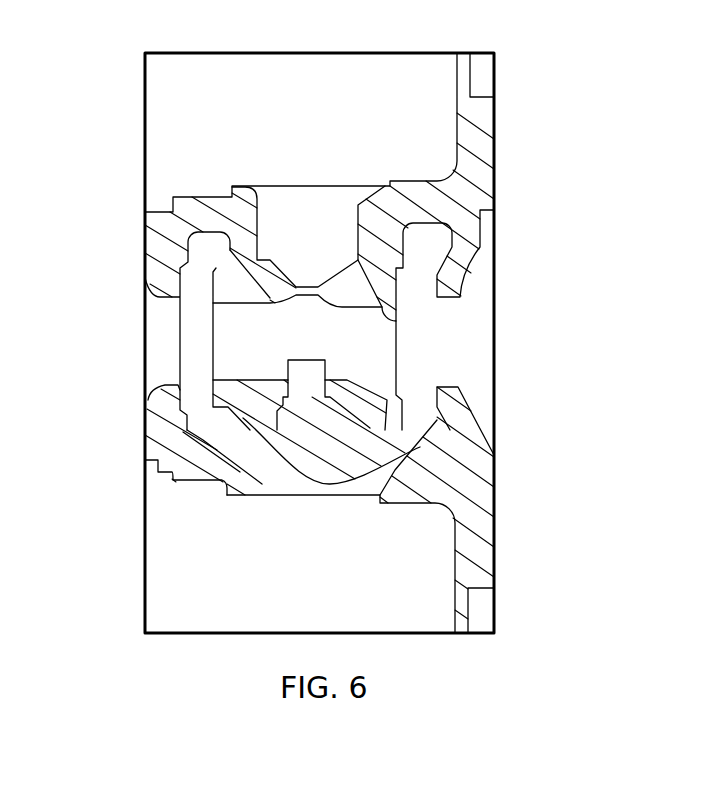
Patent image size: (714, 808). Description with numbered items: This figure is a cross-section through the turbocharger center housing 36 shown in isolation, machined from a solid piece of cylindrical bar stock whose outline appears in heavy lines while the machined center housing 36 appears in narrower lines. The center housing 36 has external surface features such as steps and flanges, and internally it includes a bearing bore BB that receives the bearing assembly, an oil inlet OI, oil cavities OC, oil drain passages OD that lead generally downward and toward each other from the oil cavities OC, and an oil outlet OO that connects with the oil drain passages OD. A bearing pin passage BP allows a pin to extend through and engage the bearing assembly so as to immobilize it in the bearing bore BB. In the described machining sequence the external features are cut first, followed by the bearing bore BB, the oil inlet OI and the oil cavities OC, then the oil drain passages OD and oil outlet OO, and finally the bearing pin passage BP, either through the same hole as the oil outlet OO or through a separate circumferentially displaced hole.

The center housing 36 is at (183, 501).
The oil inlet OI is at (258, 222).
The oil cavities OC is at (200, 253).
The bearing bore BB is at (396, 327).
The bearing pin passage BP is at (318, 418).
The oil drain passages OD is at (237, 445).
The oil outlet OO is at (267, 492).